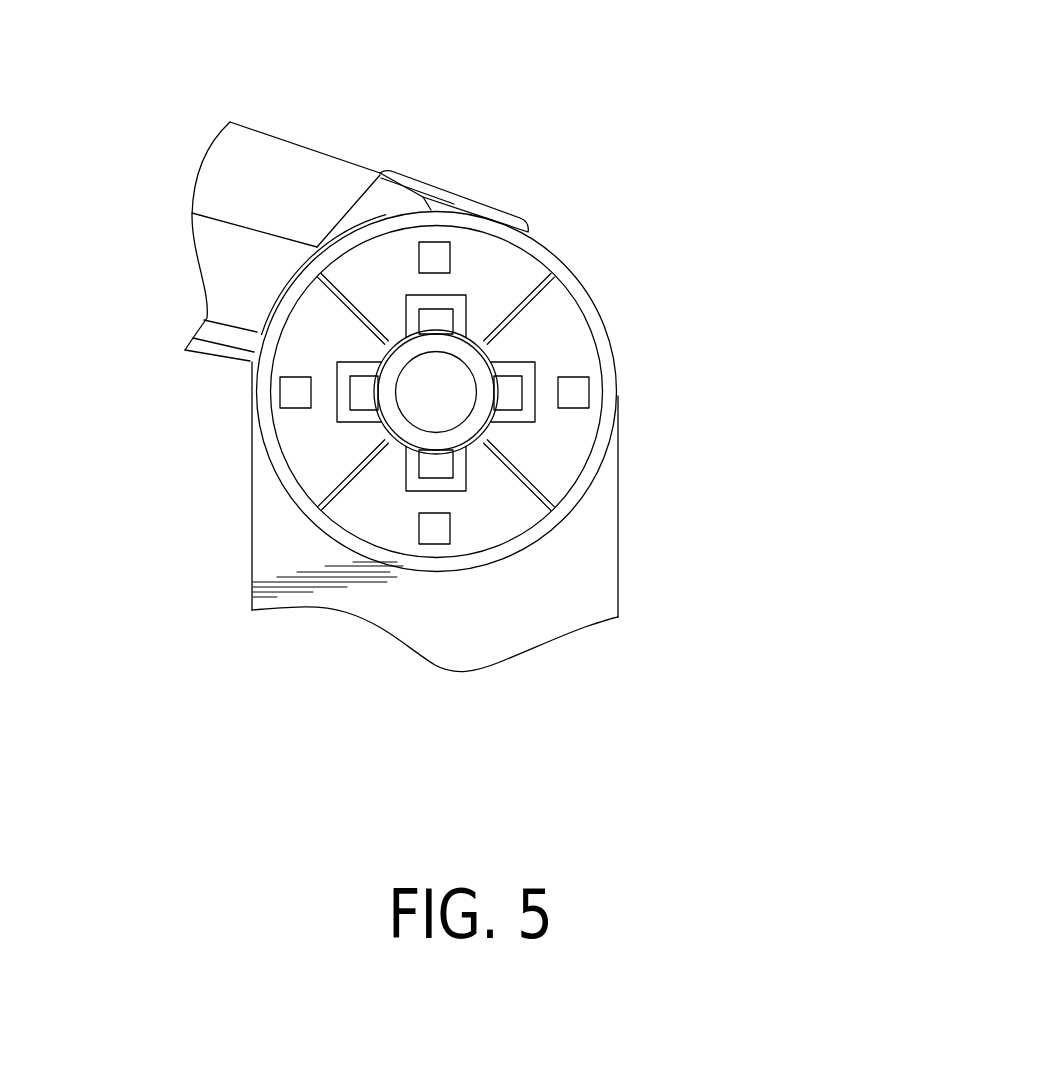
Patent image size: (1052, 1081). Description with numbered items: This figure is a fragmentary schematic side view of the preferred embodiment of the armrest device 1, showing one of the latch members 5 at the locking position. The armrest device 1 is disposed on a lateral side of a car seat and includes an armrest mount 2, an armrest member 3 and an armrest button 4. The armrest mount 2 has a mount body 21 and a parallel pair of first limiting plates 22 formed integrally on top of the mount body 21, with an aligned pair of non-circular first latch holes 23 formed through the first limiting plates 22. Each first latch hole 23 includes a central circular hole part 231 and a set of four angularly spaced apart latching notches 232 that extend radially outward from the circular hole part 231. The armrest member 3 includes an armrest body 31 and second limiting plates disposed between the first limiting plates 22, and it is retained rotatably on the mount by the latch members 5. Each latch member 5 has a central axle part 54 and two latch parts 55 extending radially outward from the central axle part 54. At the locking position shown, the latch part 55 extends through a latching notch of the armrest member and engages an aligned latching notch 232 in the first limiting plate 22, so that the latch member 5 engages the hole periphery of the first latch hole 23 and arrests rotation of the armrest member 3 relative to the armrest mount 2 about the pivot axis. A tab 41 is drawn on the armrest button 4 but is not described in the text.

The armrest device 1 is at (600, 200).
The armrest mount 2 is at (758, 530).
The mount body 21 is at (588, 585).
The first limiting plates 22 is at (553, 488).
The first latch holes 23 is at (505, 433).
The circular hole part 231 is at (467, 451).
The latching notches 232 is at (468, 331).
The armrest member 3 is at (156, 134).
The armrest body 31 is at (277, 193).
The armrest button 4 is at (420, 122).
The tab 41 is at (452, 207).
The latch members 5 is at (458, 299).
The central axle part 54 is at (415, 403).
The latch part 55 is at (437, 319).